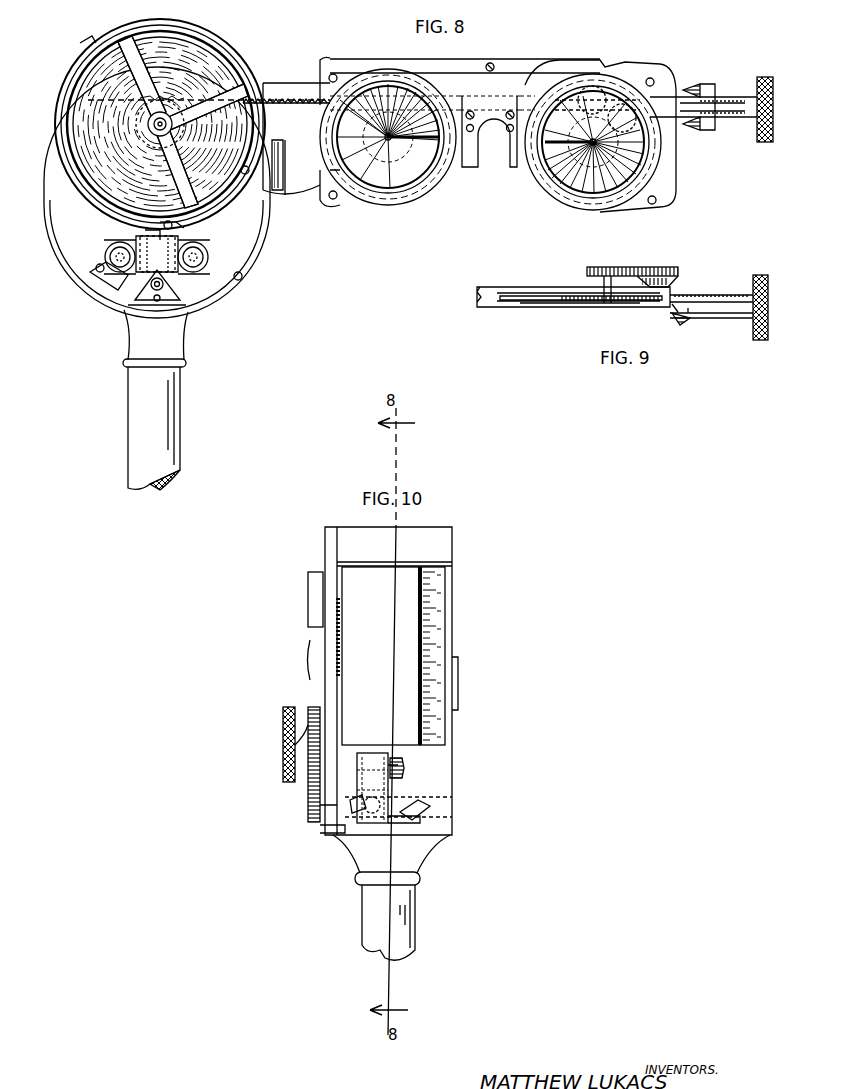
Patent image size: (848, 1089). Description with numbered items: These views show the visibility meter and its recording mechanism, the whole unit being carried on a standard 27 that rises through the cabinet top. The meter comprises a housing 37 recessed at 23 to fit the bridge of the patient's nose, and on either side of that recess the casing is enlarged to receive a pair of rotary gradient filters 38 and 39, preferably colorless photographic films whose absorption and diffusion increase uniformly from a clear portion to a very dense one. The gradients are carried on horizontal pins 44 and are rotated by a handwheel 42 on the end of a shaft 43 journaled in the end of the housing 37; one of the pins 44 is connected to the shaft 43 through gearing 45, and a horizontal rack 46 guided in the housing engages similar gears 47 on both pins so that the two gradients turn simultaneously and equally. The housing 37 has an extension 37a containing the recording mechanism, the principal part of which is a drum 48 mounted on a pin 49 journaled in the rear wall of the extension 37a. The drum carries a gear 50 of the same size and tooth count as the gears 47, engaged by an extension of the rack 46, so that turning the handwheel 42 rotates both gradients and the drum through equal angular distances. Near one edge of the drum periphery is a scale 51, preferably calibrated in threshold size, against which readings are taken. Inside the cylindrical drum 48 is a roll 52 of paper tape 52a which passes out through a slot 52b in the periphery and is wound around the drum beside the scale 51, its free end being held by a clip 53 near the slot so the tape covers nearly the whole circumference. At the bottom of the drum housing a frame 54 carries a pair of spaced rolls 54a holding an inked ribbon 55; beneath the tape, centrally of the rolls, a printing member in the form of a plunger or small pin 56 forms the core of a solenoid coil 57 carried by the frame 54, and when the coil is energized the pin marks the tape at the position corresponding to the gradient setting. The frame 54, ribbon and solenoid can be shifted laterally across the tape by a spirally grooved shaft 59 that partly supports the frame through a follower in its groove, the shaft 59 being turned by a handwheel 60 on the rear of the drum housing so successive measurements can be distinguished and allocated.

In FIG. 8, the recess 23 is at (506, 134).
In FIG. 8, the standard 27 is at (176, 398).
In FIG. 10, the standard 27 is at (410, 912).
In FIG. 8, the housing 37 is at (521, 60).
In FIG. 8, the housing extension 37a is at (240, 46).
In FIG. 10, the housing extension 37a is at (440, 527).
In FIG. 8, the gradient filter 38 is at (583, 97).
In FIG. 9, the gradient filter 38 is at (547, 310).
In FIG. 8, the gradient filter 39 is at (358, 92).
In FIG. 8, the handwheel 42 is at (764, 77).
In FIG. 9, the handwheel 42 is at (762, 275).
In FIG. 8, the shaft 43 is at (732, 96).
In FIG. 9, the shaft 43 is at (723, 297).
In FIG. 9, the pin 44 is at (604, 290).
In FIG. 9, the gearing 45 is at (663, 266).
In FIG. 8, the rack 46 is at (292, 100).
In FIG. 9, the rack 46 is at (512, 300).
In FIG. 8, the gear 47 is at (375, 165).
In FIG. 9, the gear 47 is at (633, 308).
In FIG. 8, the drum 48 is at (58, 118).
In FIG. 10, the drum 48 is at (405, 596).
In FIG. 8, the pin 49 is at (162, 130).
In FIG. 8, the gear 50 is at (160, 122).
In FIG. 10, the scale 51 is at (440, 630).
In FIG. 8, the roll 52 is at (96, 172).
In FIG. 8, the paper tape 52a is at (157, 224).
In FIG. 8, the slot 52b is at (186, 222).
In FIG. 8, the clip 53 is at (178, 225).
In FIG. 8, the frame 54 is at (143, 263).
In FIG. 10, the frame 54 is at (357, 773).
In FIG. 10, the rolls 54a is at (390, 765).
In FIG. 8, the inked ribbon 55 is at (118, 240).
In FIG. 8, the printing member 56 is at (162, 248).
In FIG. 8, the solenoid coil 57 is at (146, 258).
In FIG. 10, the grooved shaft 59 is at (410, 812).
In FIG. 10, the handwheel 60 is at (285, 769).